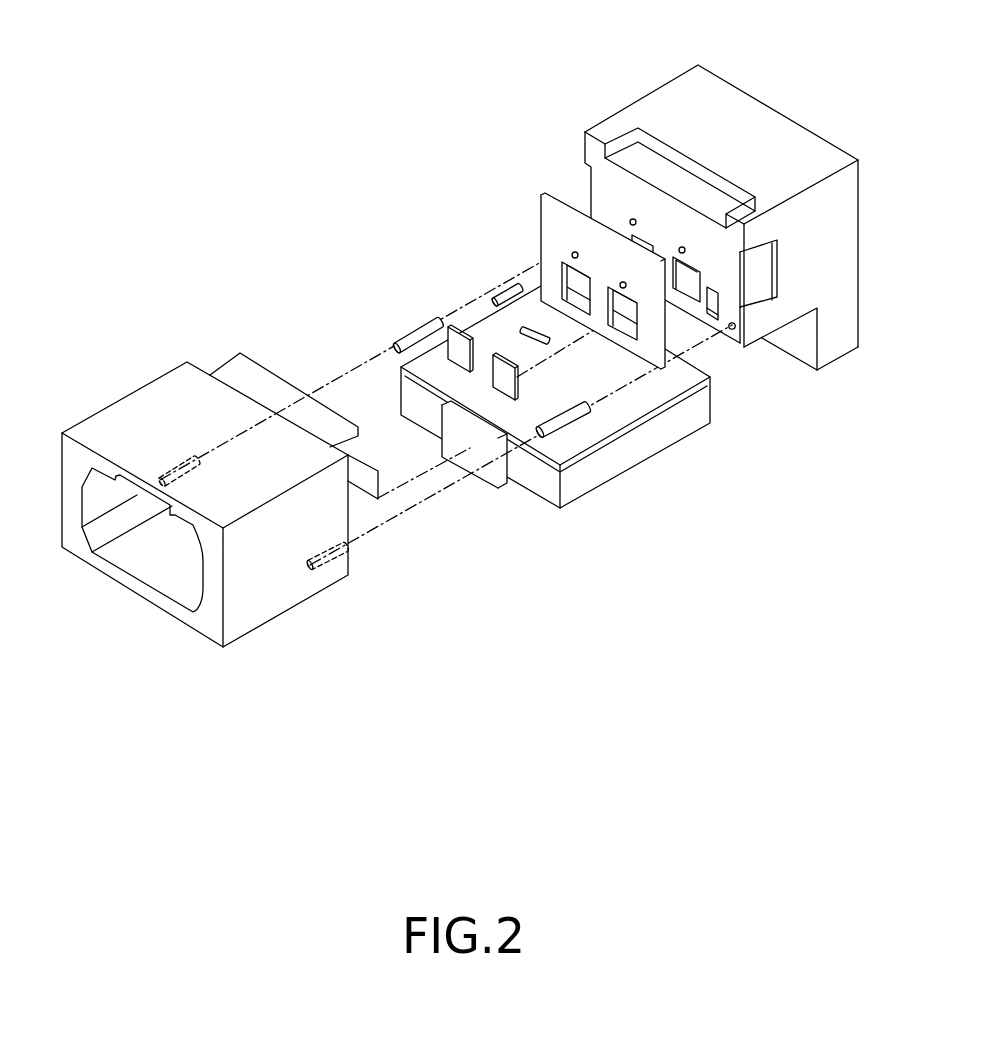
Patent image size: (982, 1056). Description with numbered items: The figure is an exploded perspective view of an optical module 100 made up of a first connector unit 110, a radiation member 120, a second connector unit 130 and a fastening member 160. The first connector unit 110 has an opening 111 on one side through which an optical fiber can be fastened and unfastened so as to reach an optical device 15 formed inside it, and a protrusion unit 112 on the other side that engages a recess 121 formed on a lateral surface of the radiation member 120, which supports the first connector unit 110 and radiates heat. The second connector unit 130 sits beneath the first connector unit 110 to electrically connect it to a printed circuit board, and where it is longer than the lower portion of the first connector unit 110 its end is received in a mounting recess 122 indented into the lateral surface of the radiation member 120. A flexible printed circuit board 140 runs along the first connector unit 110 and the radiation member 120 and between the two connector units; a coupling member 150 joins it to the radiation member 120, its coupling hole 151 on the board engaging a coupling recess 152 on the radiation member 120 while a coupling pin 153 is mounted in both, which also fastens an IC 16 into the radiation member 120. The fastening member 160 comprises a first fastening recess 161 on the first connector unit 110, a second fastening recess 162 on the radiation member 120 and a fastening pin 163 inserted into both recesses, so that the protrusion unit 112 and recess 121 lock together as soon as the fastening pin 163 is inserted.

The optical module 100 is at (249, 150).
The first connector unit 110 is at (323, 506).
The opening 111 is at (167, 563).
The protrusion unit 112 is at (347, 457).
The radiation member 120 is at (680, 325).
The recess 121 is at (763, 260).
The mounting recess 122 is at (807, 345).
The second connector unit 130 is at (570, 408).
The flexible printed circuit board 140 is at (633, 403).
The optical device 15 is at (520, 333).
The IC 16 is at (455, 345).
The coupling member 150 is at (535, 220).
The coupling hole 151 is at (573, 253).
The coupling recess 152 is at (631, 221).
The coupling pin 153 is at (498, 288).
The fastening member 160 is at (668, 625).
The first fastening recess 161 is at (347, 552).
The second fastening recess 162 is at (553, 425).
The fastening pin 163 is at (735, 329).